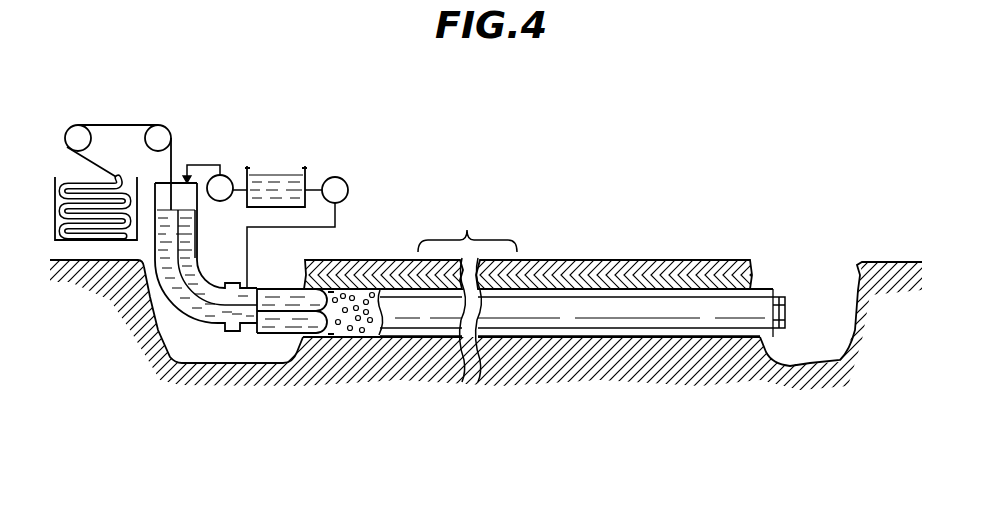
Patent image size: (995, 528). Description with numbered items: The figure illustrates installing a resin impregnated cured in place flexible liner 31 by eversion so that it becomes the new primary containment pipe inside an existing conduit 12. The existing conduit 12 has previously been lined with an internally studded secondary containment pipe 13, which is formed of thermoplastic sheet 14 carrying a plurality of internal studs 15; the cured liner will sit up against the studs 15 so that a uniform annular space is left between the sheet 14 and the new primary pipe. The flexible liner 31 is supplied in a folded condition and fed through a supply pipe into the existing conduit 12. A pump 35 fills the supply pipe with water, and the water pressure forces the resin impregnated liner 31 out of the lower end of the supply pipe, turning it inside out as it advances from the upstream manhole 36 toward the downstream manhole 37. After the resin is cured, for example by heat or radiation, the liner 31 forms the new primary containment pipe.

The existing conduit 12 is at (538, 337).
The internally studded secondary containment pipe 13 is at (783, 292).
The thermoplastic sheet 14 is at (365, 334).
The internal studs 15 is at (350, 332).
The cured in place flexible liner 31 is at (112, 122).
The pump 35 is at (280, 169).
The upstream manhole 36 is at (233, 350).
The downstream manhole 37 is at (817, 337).